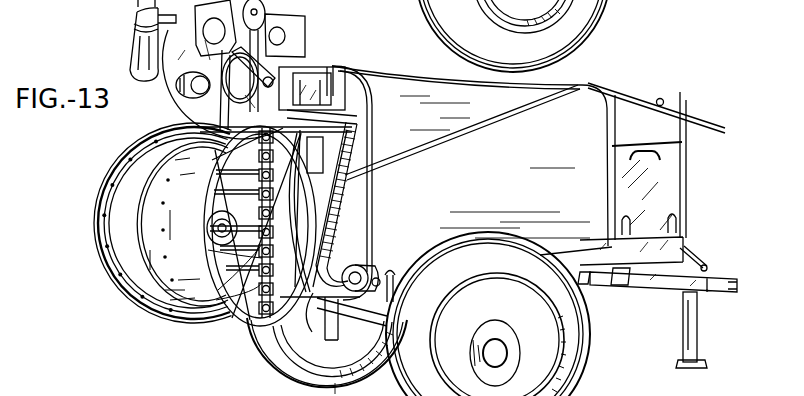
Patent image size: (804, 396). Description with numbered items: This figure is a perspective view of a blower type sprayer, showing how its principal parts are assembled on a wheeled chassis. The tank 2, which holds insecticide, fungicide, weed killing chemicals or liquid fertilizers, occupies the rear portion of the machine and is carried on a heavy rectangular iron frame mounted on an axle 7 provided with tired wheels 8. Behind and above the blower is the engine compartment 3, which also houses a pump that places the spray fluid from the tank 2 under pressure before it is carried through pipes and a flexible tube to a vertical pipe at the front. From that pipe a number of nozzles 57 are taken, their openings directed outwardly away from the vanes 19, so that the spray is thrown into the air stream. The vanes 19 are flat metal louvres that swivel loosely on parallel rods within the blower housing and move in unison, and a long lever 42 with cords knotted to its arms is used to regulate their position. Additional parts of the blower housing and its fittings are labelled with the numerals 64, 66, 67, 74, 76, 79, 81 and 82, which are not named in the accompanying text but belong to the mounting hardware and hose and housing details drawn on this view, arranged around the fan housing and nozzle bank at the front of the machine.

The tank 2 is at (534, 190).
The engine compartment 3 is at (630, 117).
The axle 7 is at (496, 360).
The tired wheels 8 is at (574, 372).
The vanes 19 is at (210, 230).
The lever 42 is at (317, 77).
The nozzles 57 is at (240, 317).
The hose 64 is at (332, 218).
The pump 66 is at (354, 266).
The pump fitting 67 is at (390, 268).
The fan housing flange 74 is at (100, 223).
The fan housing 76 is at (133, 287).
The control lever 79 is at (283, 47).
The engine 81 is at (200, 130).
The fan hub 82 is at (207, 220).